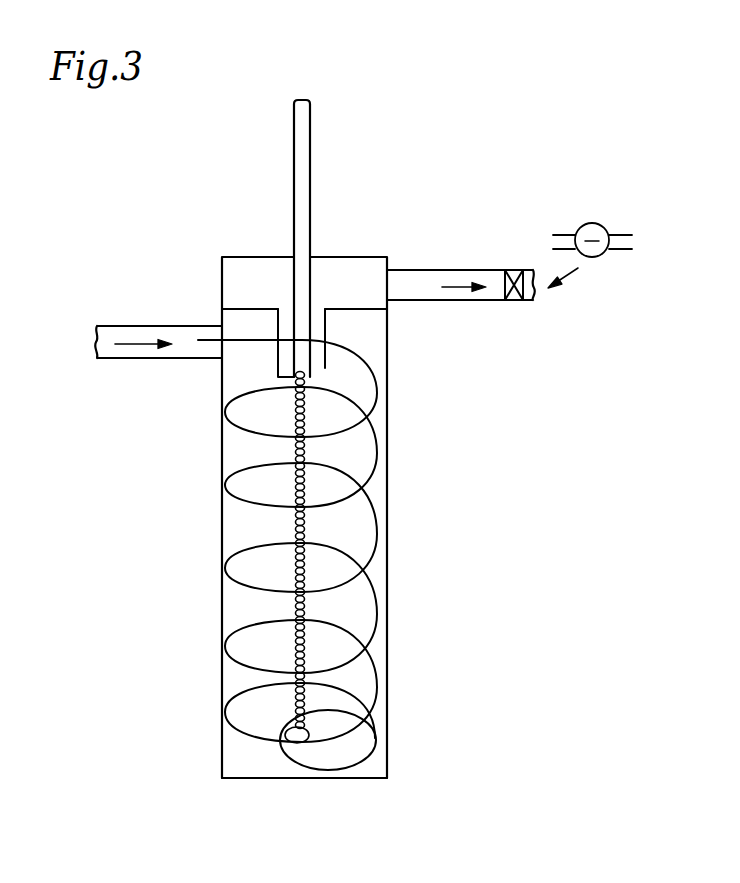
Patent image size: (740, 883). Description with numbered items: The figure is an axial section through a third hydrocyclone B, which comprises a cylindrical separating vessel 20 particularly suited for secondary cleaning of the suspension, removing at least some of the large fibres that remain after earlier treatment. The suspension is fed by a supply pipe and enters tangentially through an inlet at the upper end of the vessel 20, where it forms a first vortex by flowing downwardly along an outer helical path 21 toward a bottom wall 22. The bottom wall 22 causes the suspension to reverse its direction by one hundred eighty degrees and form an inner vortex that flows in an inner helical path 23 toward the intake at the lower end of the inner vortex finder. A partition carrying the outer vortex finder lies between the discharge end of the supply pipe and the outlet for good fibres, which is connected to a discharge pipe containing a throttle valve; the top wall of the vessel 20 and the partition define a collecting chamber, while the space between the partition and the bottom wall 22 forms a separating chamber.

The cylindrical separating vessel 20 is at (398, 428).
The outer helical path 21 is at (376, 604).
The bottom wall 22 is at (285, 779).
The inner helical path 23 is at (304, 546).
The hydrocyclone B is at (147, 592).